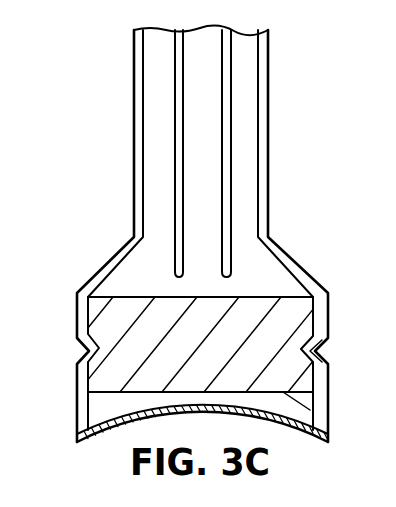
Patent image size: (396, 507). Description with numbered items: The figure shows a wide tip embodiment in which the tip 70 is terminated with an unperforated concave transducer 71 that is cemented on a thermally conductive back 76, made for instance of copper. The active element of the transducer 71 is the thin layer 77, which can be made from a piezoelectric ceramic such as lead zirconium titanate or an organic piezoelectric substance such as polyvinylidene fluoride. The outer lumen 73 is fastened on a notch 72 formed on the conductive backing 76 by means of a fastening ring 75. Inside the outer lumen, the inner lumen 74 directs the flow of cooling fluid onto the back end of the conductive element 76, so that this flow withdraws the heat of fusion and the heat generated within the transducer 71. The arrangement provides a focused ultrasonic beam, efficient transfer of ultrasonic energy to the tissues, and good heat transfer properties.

The tip 70 is at (288, 112).
The transducer 71 is at (262, 398).
The notch 72 is at (80, 348).
The outer lumen 73 is at (266, 216).
The inner lumen 74 is at (173, 157).
The fastening ring 75 is at (328, 352).
The thermally conductive back 76 is at (98, 395).
The thin layer 77 is at (290, 413).